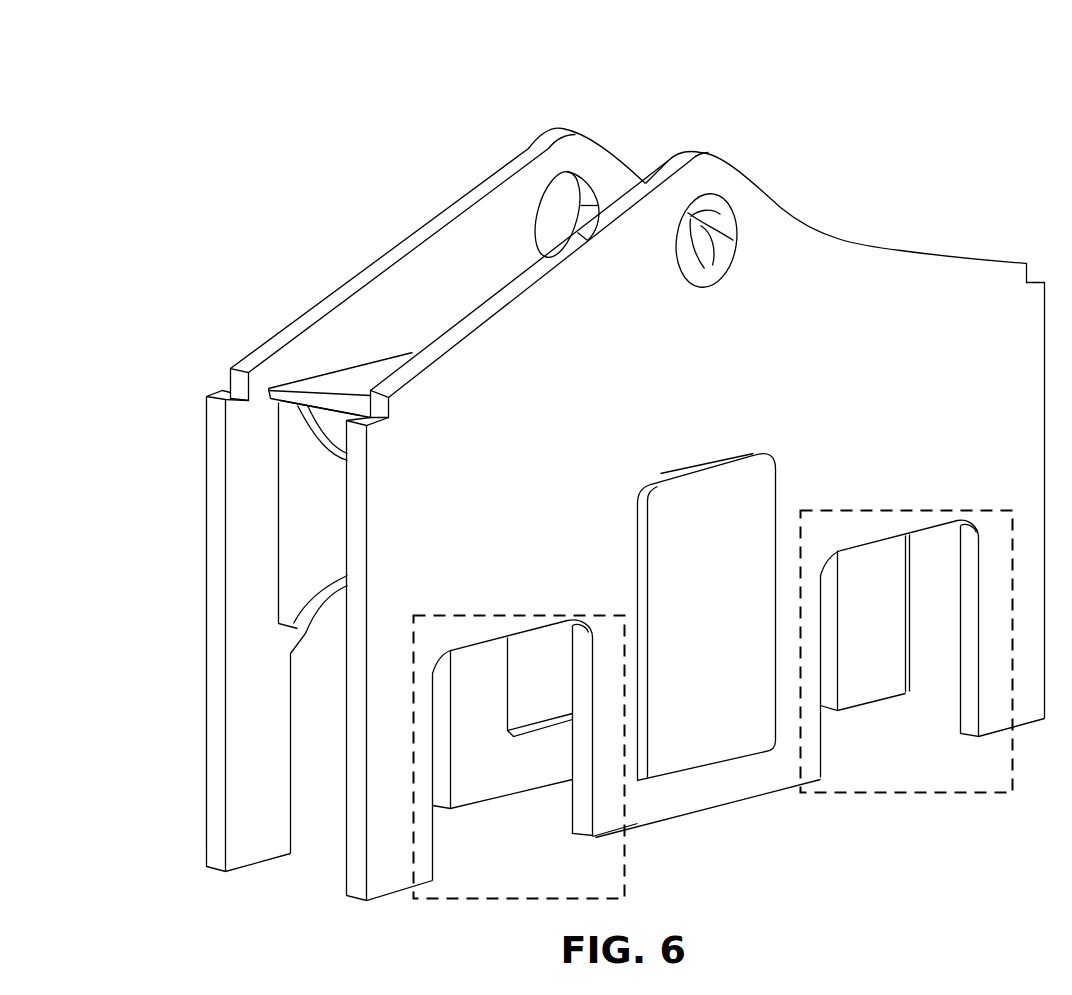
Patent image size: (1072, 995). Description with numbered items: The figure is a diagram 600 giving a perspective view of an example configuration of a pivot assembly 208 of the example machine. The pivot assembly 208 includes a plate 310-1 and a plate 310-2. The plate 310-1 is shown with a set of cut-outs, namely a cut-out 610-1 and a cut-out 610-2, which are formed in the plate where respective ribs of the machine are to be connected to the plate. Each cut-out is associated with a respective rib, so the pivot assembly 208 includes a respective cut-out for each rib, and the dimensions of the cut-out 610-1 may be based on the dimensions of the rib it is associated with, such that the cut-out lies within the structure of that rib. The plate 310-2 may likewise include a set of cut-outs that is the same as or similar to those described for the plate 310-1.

The diagram 600 is at (126, 63).
The plate 310-1 is at (861, 326).
The plate 310-2 is at (424, 327).
The cut-out 610-1 is at (487, 615).
The cut-out 610-2 is at (872, 510).
The pivot assembly 208 is at (626, 627).